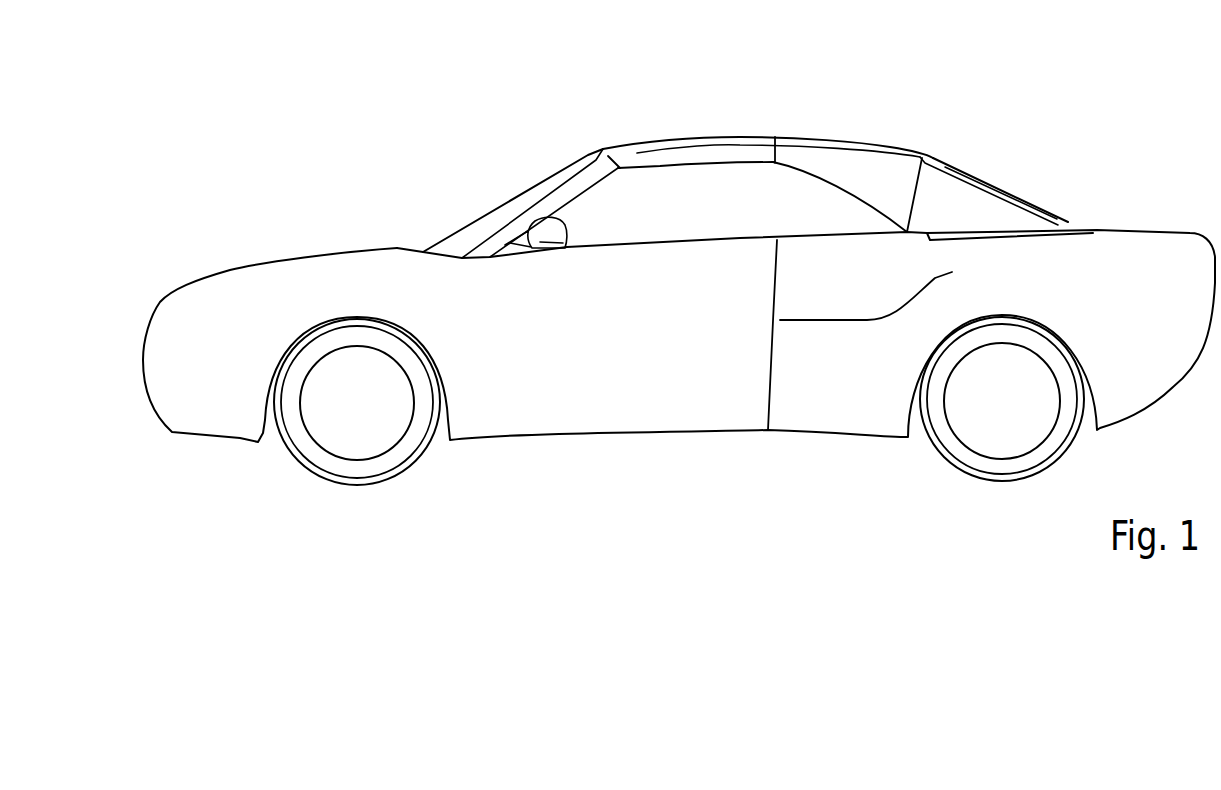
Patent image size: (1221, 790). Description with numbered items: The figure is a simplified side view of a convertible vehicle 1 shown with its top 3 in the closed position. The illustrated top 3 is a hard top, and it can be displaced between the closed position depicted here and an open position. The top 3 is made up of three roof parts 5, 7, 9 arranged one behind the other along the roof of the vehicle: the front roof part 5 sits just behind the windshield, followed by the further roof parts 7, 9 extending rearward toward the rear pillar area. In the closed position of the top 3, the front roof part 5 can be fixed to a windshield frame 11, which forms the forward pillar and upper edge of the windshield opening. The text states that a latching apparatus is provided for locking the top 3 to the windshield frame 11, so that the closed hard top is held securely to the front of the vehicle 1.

The convertible vehicle 1 is at (303, 110).
The top 3 is at (772, 104).
The front roof part 5 is at (692, 140).
The roof part 7 is at (890, 148).
The roof part 9 is at (942, 160).
The windshield frame 11 is at (605, 148).